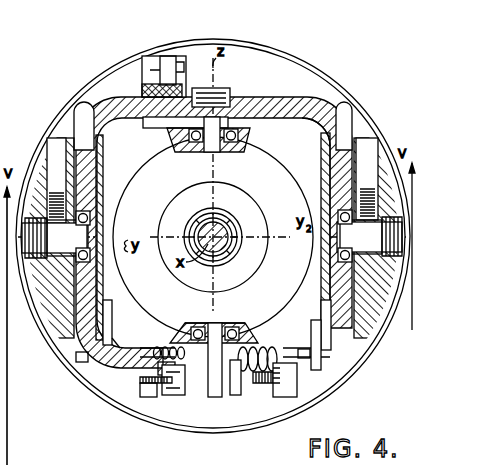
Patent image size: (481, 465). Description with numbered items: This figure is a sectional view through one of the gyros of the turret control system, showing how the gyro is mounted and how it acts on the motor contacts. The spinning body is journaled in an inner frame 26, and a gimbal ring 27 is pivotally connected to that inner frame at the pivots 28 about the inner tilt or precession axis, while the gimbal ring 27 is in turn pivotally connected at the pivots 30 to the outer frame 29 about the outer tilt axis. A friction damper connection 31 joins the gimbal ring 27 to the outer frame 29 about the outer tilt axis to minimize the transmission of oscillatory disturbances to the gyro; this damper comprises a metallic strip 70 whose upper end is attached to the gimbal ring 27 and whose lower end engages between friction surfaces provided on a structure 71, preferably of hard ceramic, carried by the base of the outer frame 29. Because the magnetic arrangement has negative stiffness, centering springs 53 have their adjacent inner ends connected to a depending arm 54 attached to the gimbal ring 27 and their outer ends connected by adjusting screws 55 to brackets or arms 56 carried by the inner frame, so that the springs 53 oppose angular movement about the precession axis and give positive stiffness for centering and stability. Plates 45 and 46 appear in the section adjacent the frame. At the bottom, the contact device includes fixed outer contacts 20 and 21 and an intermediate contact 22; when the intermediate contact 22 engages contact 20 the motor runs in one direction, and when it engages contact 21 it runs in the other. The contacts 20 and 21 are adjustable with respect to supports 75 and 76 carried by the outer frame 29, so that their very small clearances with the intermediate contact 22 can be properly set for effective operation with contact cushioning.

The outer contact 20 is at (184, 396).
The outer contact 21 is at (238, 396).
The intermediate contact 22 is at (218, 398).
The inner frame 26 is at (304, 116).
The gimbal ring 27 is at (272, 104).
The pivotal connection 28 is at (240, 104).
The outer frame 29 is at (375, 157).
The pivotal connection 30 is at (102, 236).
The friction damper connection 31 is at (146, 85).
The plate 45 is at (104, 161).
The plate 46 is at (321, 165).
The centering spring 53 is at (166, 323).
The depending arm 54 is at (241, 322).
The adjusting screw 55 is at (105, 356).
The bracket or arm 56 is at (172, 344).
The metallic strip 70 is at (179, 96).
The friction surface structure 71 is at (150, 64).
The support 75 is at (138, 396).
The support 76 is at (292, 398).